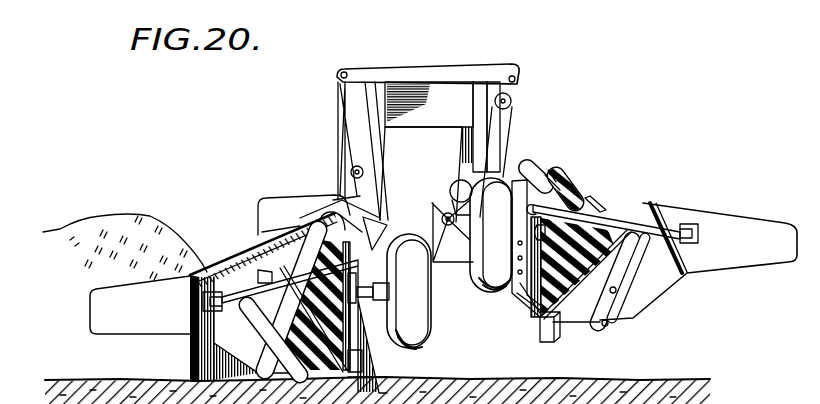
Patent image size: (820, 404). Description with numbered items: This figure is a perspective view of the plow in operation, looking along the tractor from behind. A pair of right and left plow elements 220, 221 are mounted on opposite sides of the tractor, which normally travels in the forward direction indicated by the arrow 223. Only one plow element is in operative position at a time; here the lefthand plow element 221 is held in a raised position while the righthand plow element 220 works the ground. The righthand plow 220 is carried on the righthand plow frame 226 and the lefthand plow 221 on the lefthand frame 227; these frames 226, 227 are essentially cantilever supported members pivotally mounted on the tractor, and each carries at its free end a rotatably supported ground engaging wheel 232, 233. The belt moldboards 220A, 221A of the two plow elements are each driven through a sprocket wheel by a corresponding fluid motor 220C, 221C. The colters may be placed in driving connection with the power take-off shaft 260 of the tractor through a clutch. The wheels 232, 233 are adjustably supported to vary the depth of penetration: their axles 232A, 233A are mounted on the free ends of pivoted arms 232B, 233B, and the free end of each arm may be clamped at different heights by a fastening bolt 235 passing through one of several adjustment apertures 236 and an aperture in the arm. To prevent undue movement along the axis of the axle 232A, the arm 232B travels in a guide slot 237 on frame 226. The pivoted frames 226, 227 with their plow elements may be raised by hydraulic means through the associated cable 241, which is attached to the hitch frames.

The righthand plow element 220 is at (605, 172).
The belt moldboard 220A is at (603, 210).
The fluid motor 220C is at (553, 175).
The lefthand plow element 221 is at (222, 240).
The belt moldboard 221A is at (283, 262).
The fluid motor 221C is at (281, 203).
The arrow 223 is at (320, 152).
The righthand plow frame 226 is at (536, 165).
The lefthand plow frame 227 is at (337, 215).
The ground engaging wheel 232 is at (477, 192).
The axle 232A is at (528, 283).
The pivoted arm 232B is at (598, 205).
The ground engaging wheel 233 is at (411, 238).
The axle 233A is at (395, 297).
The pivoted arm 233B is at (356, 307).
The fastening bolt 235 is at (490, 267).
The adjustment apertures 236 is at (492, 288).
The guide slot 237 is at (547, 297).
The cable 241 is at (520, 117).
The power take-off shaft 260 is at (442, 214).